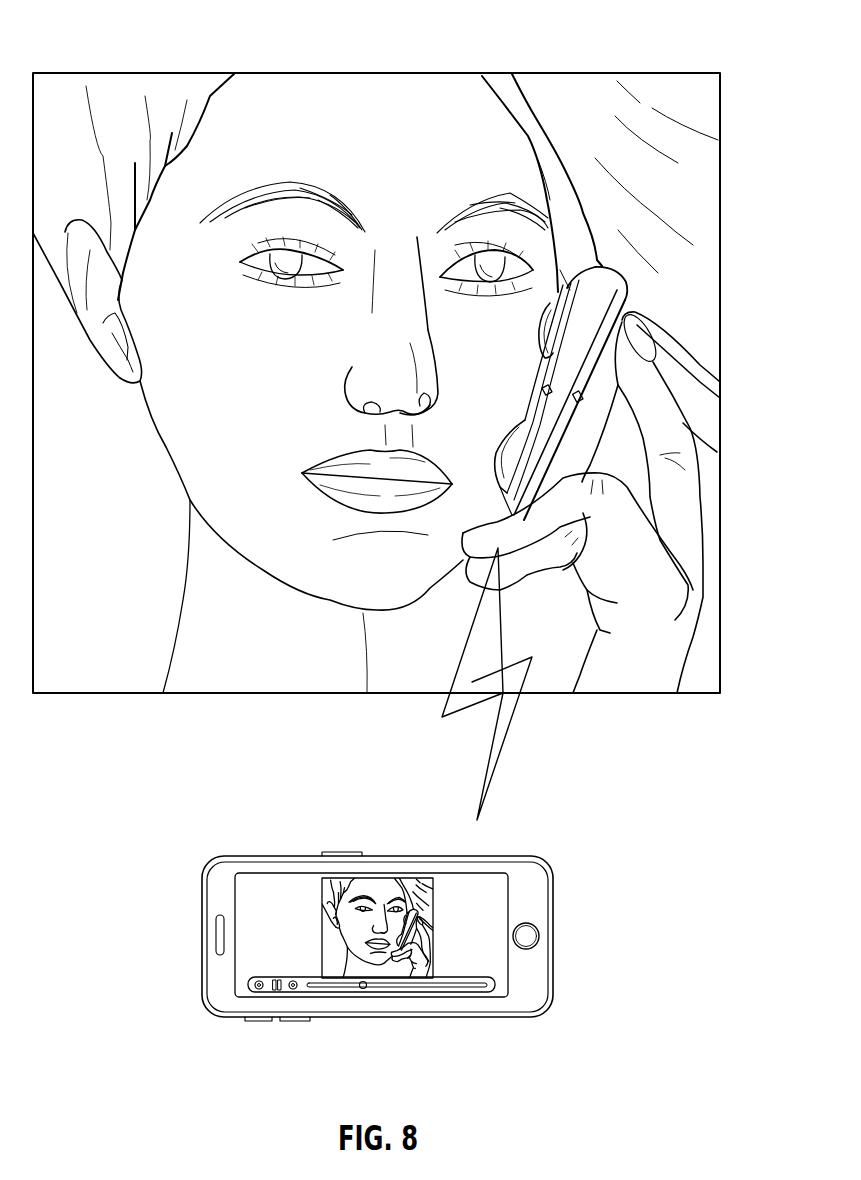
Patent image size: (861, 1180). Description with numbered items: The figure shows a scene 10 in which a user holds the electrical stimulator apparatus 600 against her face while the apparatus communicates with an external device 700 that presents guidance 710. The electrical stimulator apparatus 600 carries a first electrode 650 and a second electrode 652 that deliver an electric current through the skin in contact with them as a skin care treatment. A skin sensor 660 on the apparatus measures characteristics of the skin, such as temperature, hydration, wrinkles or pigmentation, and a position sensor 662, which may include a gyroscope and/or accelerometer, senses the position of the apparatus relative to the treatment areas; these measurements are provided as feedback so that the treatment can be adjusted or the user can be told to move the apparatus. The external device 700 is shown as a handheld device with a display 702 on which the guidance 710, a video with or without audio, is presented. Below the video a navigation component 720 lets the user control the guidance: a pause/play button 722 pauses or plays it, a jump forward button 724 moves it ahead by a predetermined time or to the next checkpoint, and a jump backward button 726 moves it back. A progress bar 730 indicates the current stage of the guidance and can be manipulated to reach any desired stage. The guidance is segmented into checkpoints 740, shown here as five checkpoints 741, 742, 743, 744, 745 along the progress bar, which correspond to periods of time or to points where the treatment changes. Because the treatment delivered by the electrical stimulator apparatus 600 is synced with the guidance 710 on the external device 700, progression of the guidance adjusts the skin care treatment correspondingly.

The scene captured by camera 10 is at (752, 60).
The electrical stimulator apparatus 600 is at (618, 310).
The first electrode 650 is at (541, 338).
The second electrode 652 is at (502, 437).
The skin sensor 660 is at (545, 389).
The position sensor 662 is at (584, 399).
The external device 700 is at (550, 846).
The display 702 is at (531, 939).
The guidance 710 is at (392, 874).
The navigation component 720 is at (472, 1006).
The pause/play button 722 is at (277, 991).
The jump forward button 724 is at (293, 981).
The jump backward button 726 is at (258, 990).
The progress bar 730 is at (364, 990).
The checkpoints 740 is at (362, 990).
The first checkpoint 741 is at (323, 977).
The second checkpoint 742 is at (353, 980).
The third checkpoint 743 is at (392, 985).
The fourth checkpoint 744 is at (412, 993).
The fifth checkpoint 745 is at (435, 1000).